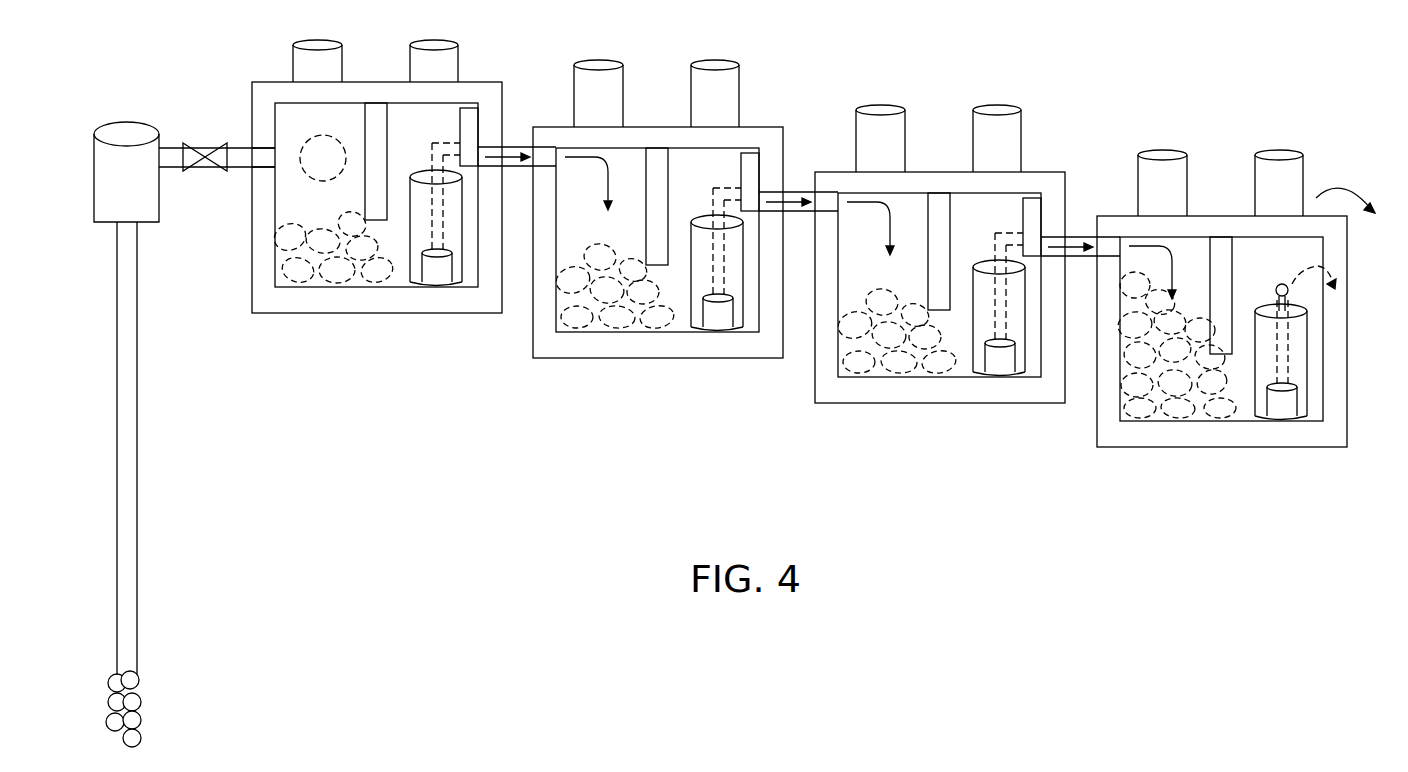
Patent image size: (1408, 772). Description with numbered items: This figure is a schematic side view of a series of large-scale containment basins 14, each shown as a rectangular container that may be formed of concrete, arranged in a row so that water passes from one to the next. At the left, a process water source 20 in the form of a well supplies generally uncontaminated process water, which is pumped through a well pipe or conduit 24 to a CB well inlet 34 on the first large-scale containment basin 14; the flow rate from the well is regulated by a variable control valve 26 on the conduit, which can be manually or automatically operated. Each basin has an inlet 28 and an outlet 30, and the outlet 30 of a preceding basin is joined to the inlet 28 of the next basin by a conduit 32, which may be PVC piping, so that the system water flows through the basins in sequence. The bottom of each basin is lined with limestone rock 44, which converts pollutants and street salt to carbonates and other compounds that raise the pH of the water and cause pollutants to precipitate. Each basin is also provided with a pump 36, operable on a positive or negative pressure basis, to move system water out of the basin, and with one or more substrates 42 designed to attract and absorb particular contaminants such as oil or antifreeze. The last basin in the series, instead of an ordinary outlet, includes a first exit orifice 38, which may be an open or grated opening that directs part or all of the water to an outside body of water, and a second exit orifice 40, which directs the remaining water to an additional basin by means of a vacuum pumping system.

The large-scale containment basin 14 is at (400, 347).
The process water source 20 is at (142, 196).
The well pipe or conduit 24 is at (172, 167).
The variable control valve 26 is at (192, 146).
The inlet 28 is at (335, 169).
The outlet 30 is at (491, 146).
The conduit 32 is at (512, 167).
The CB well inlet 34 is at (258, 150).
The pump 36 is at (435, 288).
The first exit orifice 38 is at (1306, 213).
The second exit orifice 40 is at (1290, 292).
The substrate 42 is at (462, 138).
The limestone rock 44 is at (331, 279).